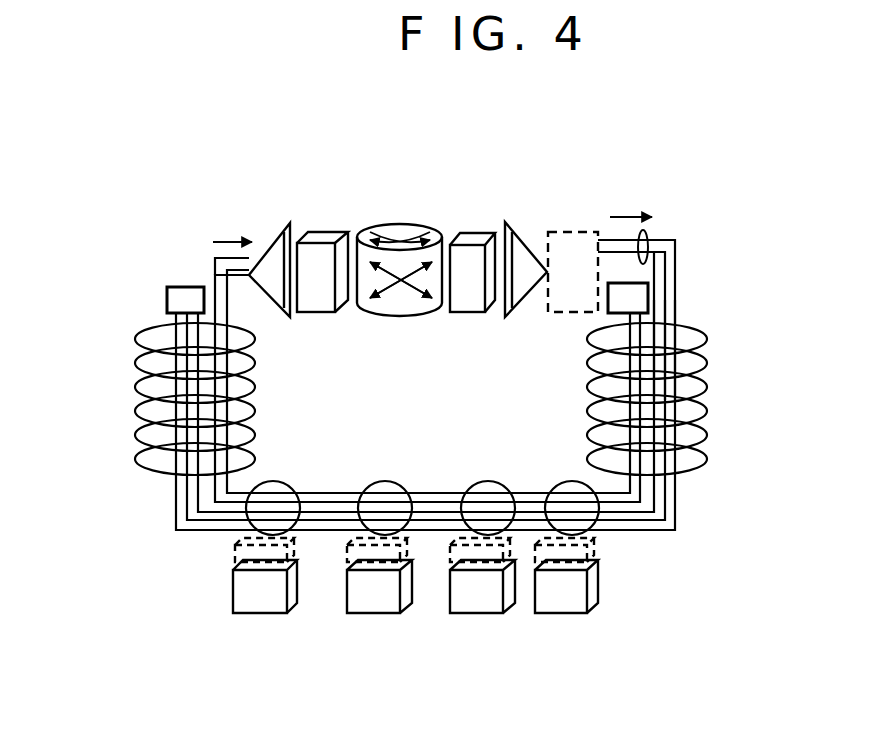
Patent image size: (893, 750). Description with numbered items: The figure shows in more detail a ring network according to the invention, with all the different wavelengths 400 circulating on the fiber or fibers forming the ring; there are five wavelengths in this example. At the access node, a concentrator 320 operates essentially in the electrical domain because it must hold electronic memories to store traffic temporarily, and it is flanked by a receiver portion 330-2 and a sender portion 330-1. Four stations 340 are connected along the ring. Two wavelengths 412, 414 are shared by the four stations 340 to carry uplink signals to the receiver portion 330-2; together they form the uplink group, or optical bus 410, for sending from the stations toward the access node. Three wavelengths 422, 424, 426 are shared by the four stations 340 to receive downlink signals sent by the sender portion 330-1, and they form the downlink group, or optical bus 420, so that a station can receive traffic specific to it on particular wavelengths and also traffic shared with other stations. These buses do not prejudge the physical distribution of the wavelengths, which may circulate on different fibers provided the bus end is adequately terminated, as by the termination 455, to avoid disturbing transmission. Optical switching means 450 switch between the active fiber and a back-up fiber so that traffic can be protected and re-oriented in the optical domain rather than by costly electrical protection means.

The concentrator 320 is at (402, 228).
The sender portion 330-1 is at (477, 238).
The receiver portion 330-2 is at (325, 240).
The stations 340 is at (562, 602).
The wavelengths 400 is at (707, 368).
The optical bus 410 is at (447, 480).
The wavelength 412 is at (305, 492).
The wavelength 414 is at (337, 495).
The optical bus 420 is at (650, 235).
The wavelength 422 is at (655, 282).
The wavelength 424 is at (666, 306).
The wavelength 426 is at (678, 320).
The optical switching means 450 is at (570, 314).
The termination 455 is at (185, 302).